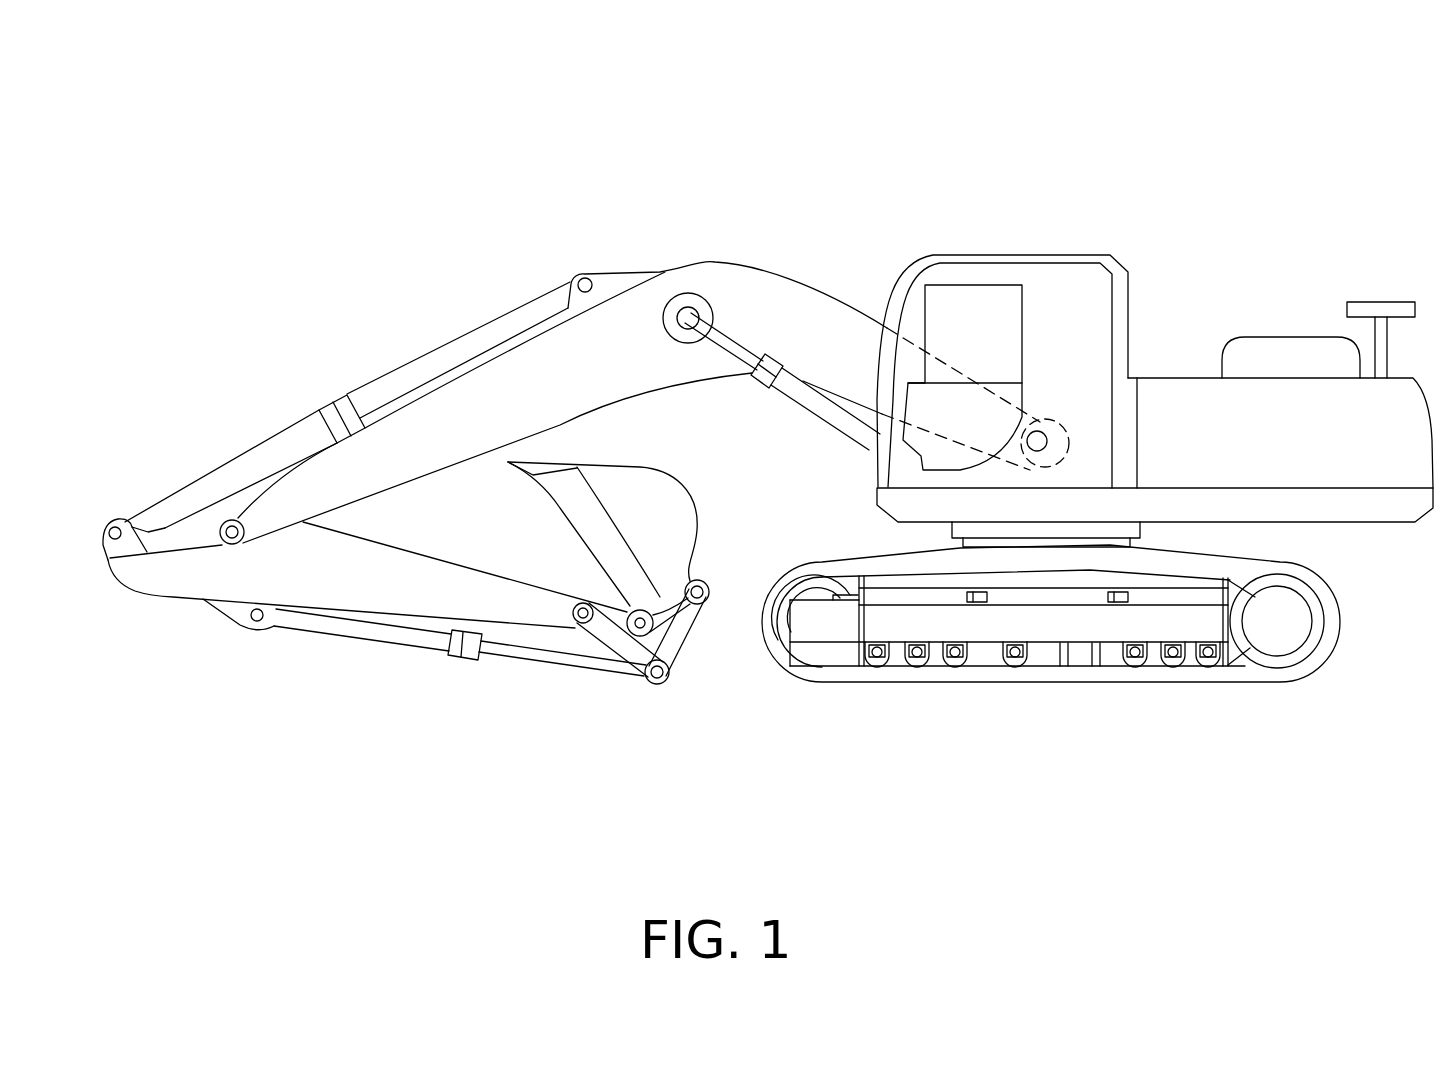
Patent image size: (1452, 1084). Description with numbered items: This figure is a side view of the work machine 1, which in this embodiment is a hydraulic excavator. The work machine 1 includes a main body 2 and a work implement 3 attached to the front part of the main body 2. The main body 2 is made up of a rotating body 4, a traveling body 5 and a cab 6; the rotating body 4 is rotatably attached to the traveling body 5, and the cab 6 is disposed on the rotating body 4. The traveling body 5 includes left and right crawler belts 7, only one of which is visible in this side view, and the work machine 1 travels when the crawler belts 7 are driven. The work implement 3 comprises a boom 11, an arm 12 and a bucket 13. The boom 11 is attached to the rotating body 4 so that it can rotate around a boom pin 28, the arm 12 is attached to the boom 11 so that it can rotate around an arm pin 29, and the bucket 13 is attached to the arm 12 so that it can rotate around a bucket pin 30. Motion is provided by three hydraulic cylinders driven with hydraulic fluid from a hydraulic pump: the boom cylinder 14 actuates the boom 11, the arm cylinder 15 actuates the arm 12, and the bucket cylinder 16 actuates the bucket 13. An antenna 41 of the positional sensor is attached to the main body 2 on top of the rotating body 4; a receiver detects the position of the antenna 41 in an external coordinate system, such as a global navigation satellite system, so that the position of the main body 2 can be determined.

The work machine 1 is at (1293, 127).
The main body 2 is at (1176, 277).
The work implement 3 is at (451, 317).
The rotating body 4 is at (1262, 387).
The traveling body 5 is at (1052, 632).
The cab 6 is at (977, 272).
The crawler belts 7 is at (903, 673).
The boom 11 is at (712, 282).
The arm 12 is at (348, 588).
The bucket 13 is at (672, 496).
The boom cylinder 14 is at (810, 403).
The arm cylinder 15 is at (388, 390).
The bucket cylinder 16 is at (438, 650).
The boom pin 28 is at (1038, 432).
The arm pin 29 is at (229, 527).
The bucket pin 30 is at (640, 630).
The antenna 41 is at (1387, 310).